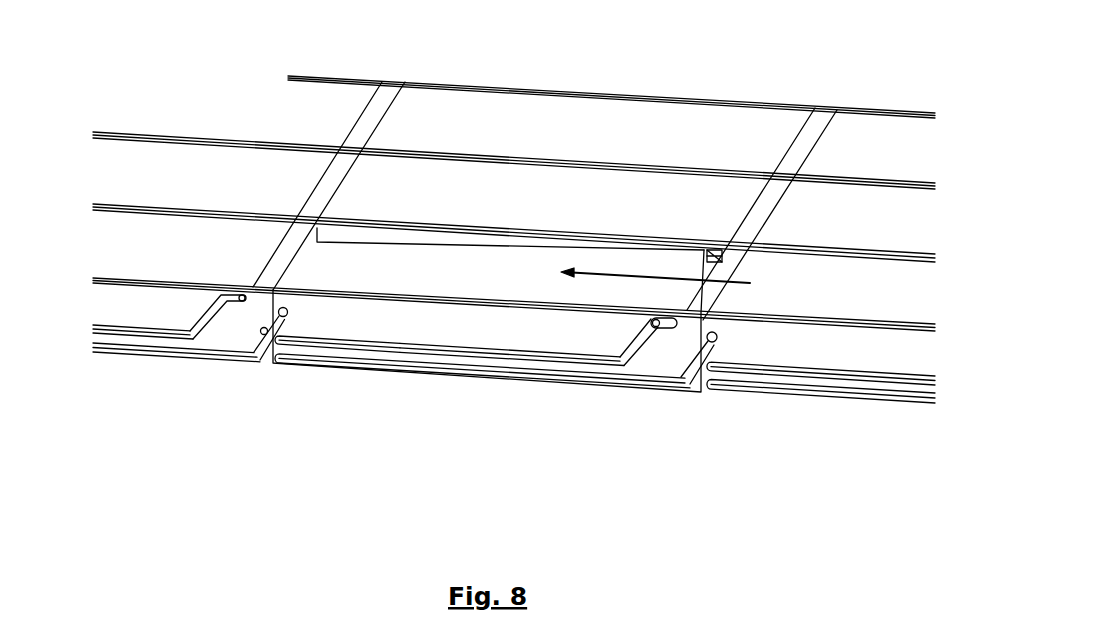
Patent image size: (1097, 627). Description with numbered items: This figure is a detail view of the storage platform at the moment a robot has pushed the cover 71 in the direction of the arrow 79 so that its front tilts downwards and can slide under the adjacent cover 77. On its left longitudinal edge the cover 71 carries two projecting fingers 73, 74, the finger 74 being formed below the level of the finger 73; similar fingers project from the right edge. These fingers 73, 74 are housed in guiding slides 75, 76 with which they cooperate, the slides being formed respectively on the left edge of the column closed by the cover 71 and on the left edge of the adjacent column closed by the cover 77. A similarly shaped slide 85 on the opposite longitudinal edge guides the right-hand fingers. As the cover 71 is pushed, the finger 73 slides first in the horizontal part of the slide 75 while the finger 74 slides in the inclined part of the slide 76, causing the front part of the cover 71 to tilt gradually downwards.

The cover 71 is at (530, 277).
The finger 73 is at (650, 318).
The finger 74 is at (300, 343).
The guiding slide 75 is at (414, 342).
The guiding slide 76 is at (163, 342).
The cover 77 is at (175, 257).
The arrow 79 is at (750, 283).
The slide 85 is at (722, 255).